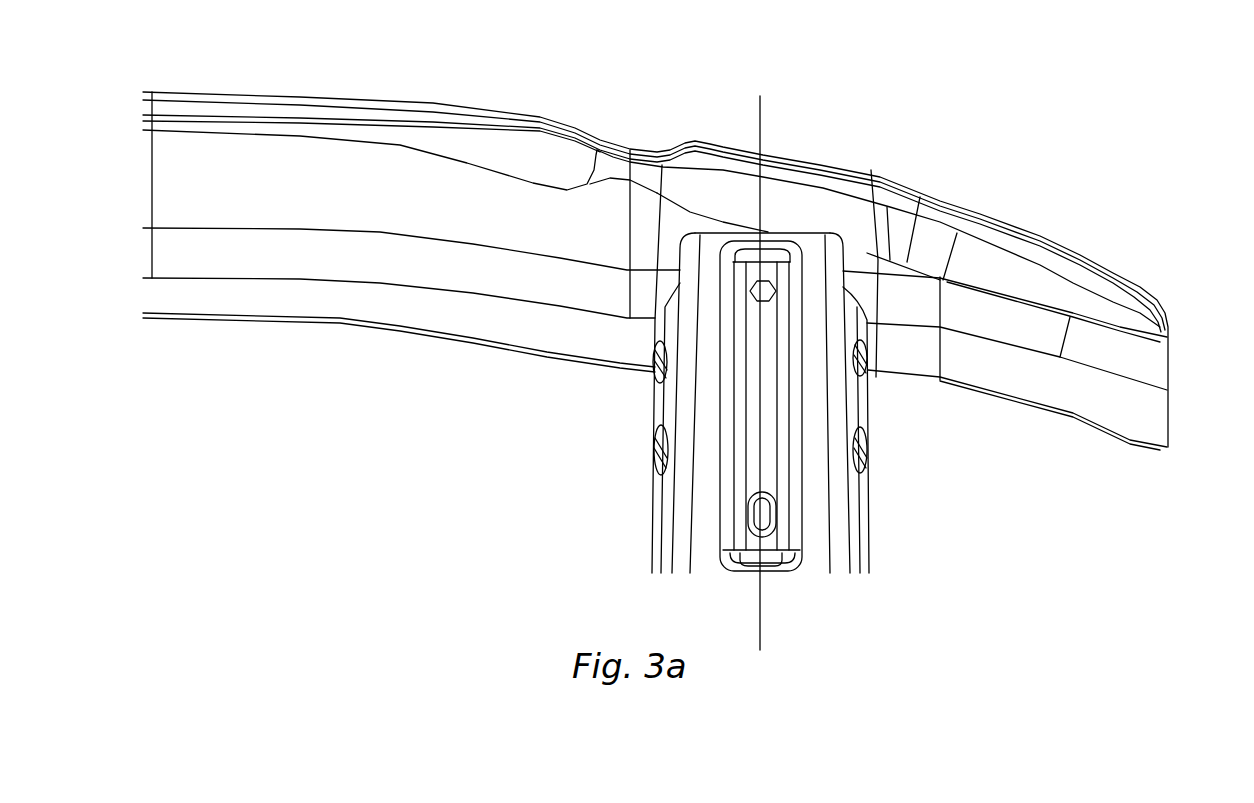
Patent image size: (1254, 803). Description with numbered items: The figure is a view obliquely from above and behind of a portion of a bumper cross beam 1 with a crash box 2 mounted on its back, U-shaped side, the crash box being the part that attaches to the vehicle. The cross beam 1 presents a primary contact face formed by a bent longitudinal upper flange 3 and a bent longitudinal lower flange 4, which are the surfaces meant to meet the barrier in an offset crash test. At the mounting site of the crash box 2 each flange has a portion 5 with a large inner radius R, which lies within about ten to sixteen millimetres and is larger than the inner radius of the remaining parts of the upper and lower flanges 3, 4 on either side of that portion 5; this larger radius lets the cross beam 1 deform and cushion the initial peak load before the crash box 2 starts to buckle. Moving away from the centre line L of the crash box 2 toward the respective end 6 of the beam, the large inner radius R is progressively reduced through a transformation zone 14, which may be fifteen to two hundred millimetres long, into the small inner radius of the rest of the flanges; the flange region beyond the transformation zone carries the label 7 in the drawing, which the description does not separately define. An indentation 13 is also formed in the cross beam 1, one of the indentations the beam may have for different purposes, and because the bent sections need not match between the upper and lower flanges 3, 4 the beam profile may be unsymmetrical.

The cross beam 1 is at (422, 183).
The crash box 2 is at (815, 484).
The bent longitudinal upper flange 3 is at (250, 107).
The bent longitudinal lower flange 4 is at (330, 323).
The portion 5 is at (722, 188).
The end 6 is at (1168, 367).
The flange 7 is at (314, 120).
The indentation 13 is at (630, 150).
The transformation zone 14 is at (990, 265).
The centre line L is at (777, 118).
The large inner radius R is at (807, 213).